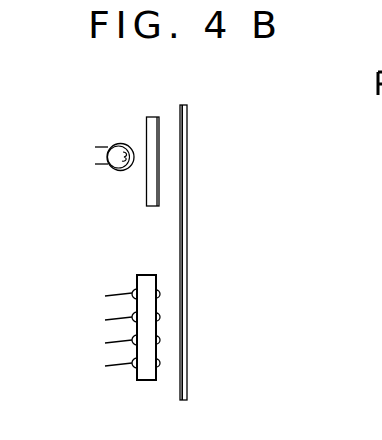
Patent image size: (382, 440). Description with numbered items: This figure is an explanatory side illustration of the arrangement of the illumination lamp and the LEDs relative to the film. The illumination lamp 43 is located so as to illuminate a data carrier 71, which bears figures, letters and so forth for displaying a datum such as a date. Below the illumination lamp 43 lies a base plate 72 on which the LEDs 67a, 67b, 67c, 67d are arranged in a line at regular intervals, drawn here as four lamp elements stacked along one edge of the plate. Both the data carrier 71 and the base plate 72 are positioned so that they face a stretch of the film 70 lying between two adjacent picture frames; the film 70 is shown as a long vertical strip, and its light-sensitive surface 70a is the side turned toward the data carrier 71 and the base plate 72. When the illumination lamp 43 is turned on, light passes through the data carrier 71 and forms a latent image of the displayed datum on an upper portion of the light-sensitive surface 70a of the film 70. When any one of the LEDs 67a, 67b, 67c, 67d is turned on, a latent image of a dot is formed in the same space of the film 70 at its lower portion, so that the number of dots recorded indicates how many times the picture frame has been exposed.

The illumination lamp 43 is at (118, 143).
The film 70 is at (207, 207).
The light-sensitive surface 70a is at (179, 113).
The data carrier 71 is at (147, 200).
The base plate 72 is at (148, 275).
The LED 67a is at (132, 367).
The LED 67b is at (132, 347).
The LED 67c is at (132, 316).
The LED 67d is at (132, 290).